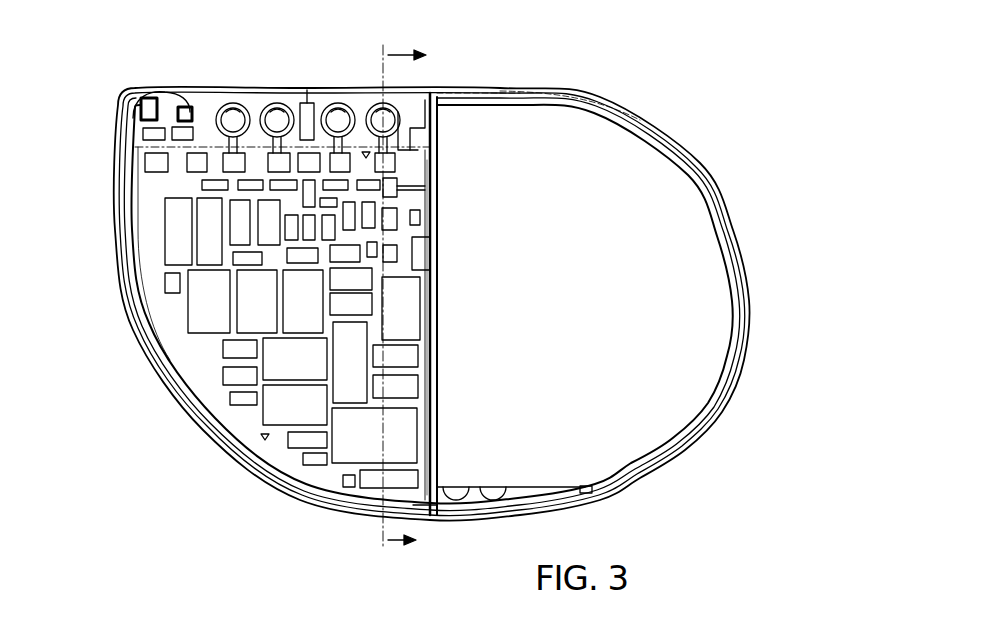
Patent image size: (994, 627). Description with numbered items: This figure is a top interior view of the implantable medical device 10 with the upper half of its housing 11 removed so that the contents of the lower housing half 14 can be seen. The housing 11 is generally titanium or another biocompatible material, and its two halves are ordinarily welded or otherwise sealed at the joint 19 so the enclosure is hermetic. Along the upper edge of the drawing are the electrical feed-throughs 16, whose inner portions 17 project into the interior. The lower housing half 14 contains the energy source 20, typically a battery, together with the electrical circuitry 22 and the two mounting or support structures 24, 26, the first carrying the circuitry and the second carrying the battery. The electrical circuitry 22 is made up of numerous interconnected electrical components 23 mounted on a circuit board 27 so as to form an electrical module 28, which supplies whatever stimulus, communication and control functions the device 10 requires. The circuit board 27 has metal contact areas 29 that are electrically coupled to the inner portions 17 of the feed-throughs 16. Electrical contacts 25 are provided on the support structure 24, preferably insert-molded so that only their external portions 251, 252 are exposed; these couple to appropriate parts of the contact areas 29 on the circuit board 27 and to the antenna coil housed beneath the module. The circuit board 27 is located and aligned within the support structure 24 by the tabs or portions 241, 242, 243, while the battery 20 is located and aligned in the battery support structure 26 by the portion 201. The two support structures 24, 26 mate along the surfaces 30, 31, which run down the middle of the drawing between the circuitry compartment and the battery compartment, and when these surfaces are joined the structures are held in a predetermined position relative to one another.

The implantable medical device 10 is at (775, 216).
The housing 11 is at (775, 291).
The lower housing half 14 is at (682, 138).
The electrical feed-throughs 16 is at (233, 103).
The inner portions of electrical feed-throughs 17 is at (276, 118).
The joint 19 is at (530, 90).
The energy source 20 is at (590, 327).
The electrical circuitry 22 is at (280, 348).
The electrical components 23 is at (355, 448).
The support structure 24 is at (165, 348).
The electrical contacts 25 is at (135, 105).
The battery support structure 26 is at (638, 104).
The circuit board 27 is at (170, 313).
The electrical module 28 is at (305, 325).
The metal contact areas 29 is at (150, 160).
The mating surface 30 is at (433, 363).
The mating surface 31 is at (433, 337).
The battery locating portion 201 is at (440, 130).
The circuit board locating tab 241 is at (173, 177).
The circuit board locating tab 242 is at (413, 503).
The circuit board locating tab 243 is at (418, 155).
The external portion of electrical contact 251 is at (187, 115).
The external portion of electrical contact 252 is at (165, 130).